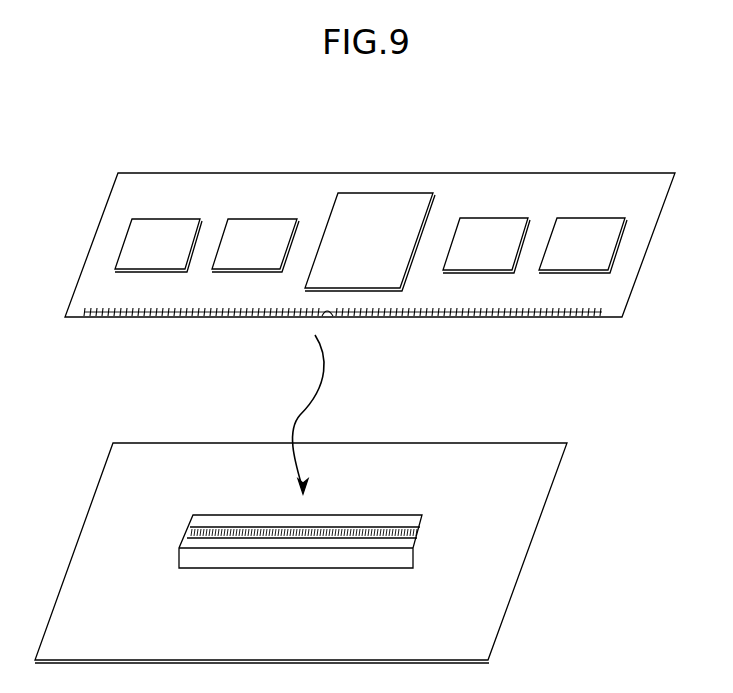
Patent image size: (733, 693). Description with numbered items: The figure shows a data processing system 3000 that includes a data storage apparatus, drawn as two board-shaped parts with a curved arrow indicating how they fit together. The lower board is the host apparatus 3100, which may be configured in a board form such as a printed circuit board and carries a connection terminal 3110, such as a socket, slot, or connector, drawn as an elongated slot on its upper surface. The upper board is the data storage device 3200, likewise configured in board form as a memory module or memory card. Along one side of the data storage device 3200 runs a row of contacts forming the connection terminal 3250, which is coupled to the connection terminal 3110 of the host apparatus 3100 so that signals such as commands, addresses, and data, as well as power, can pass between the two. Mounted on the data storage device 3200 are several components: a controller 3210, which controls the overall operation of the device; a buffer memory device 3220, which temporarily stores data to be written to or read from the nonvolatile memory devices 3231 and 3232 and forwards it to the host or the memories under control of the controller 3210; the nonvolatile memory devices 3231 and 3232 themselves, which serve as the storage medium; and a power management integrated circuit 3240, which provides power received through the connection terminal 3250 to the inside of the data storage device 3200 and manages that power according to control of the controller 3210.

The data processing system 3000 is at (220, 137).
The data storage device 3200 is at (370, 268).
The power management integrated circuit 3240 is at (158, 245).
The buffer memory device 3220 is at (255, 245).
The controller 3210 is at (370, 242).
The nonvolatile memory device 3231 is at (486, 245).
The nonvolatile memory device 3232 is at (583, 245).
The connection terminal 3250 is at (95, 318).
The host apparatus 3100 is at (301, 553).
The connection terminal 3110 is at (443, 509).